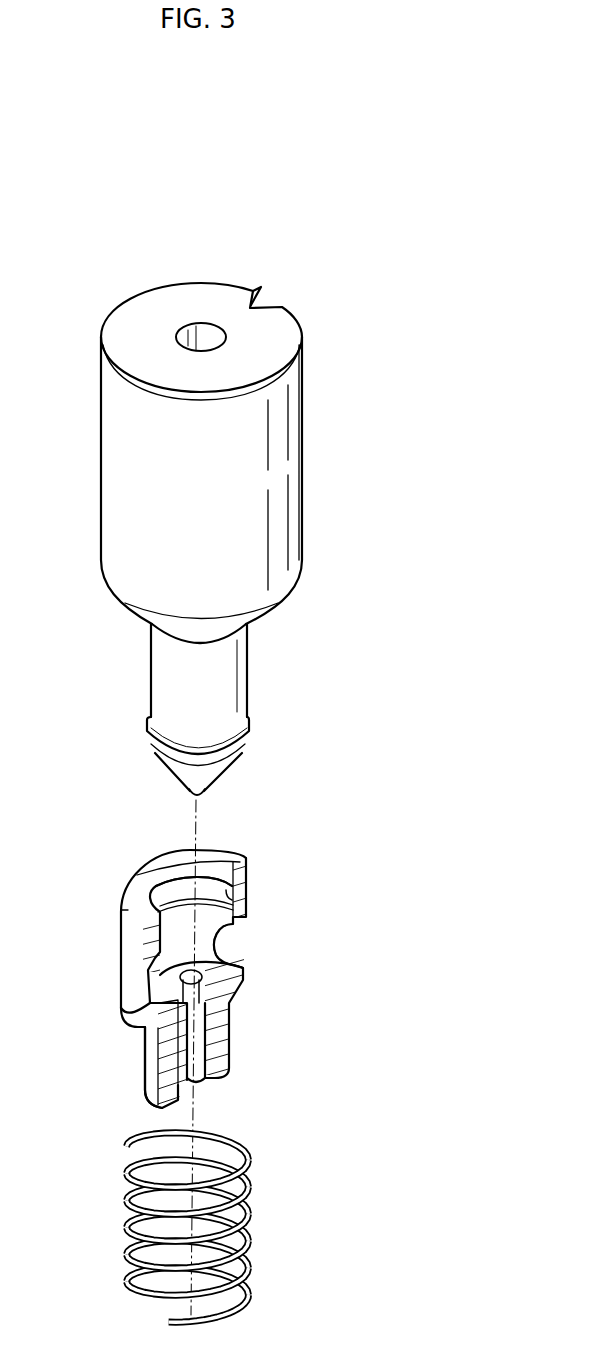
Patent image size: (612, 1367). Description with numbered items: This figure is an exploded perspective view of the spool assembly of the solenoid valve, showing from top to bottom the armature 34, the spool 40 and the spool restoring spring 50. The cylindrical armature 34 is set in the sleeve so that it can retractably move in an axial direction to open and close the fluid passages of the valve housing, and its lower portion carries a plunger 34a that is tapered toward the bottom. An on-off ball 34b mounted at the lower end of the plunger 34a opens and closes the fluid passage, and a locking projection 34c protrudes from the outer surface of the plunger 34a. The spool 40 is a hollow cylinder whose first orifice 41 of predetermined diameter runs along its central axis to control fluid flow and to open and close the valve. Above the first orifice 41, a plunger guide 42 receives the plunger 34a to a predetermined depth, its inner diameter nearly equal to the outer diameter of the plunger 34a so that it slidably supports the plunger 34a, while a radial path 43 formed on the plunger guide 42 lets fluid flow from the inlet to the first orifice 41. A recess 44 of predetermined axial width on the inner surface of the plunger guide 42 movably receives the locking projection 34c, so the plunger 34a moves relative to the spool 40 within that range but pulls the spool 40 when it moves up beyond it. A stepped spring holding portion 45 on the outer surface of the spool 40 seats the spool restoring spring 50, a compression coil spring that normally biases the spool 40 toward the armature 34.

The armature 34 is at (278, 483).
The plunger 34a is at (234, 680).
The on-off ball 34b is at (203, 798).
The locking projection 34c is at (147, 727).
The spool 40 is at (114, 967).
The first orifice 41 is at (204, 992).
The plunger guide 42 is at (160, 880).
The radial path 43 is at (224, 946).
The recess 44 is at (232, 900).
The spring holding portion 45 is at (142, 1072).
The spool restoring spring 50 is at (248, 1210).